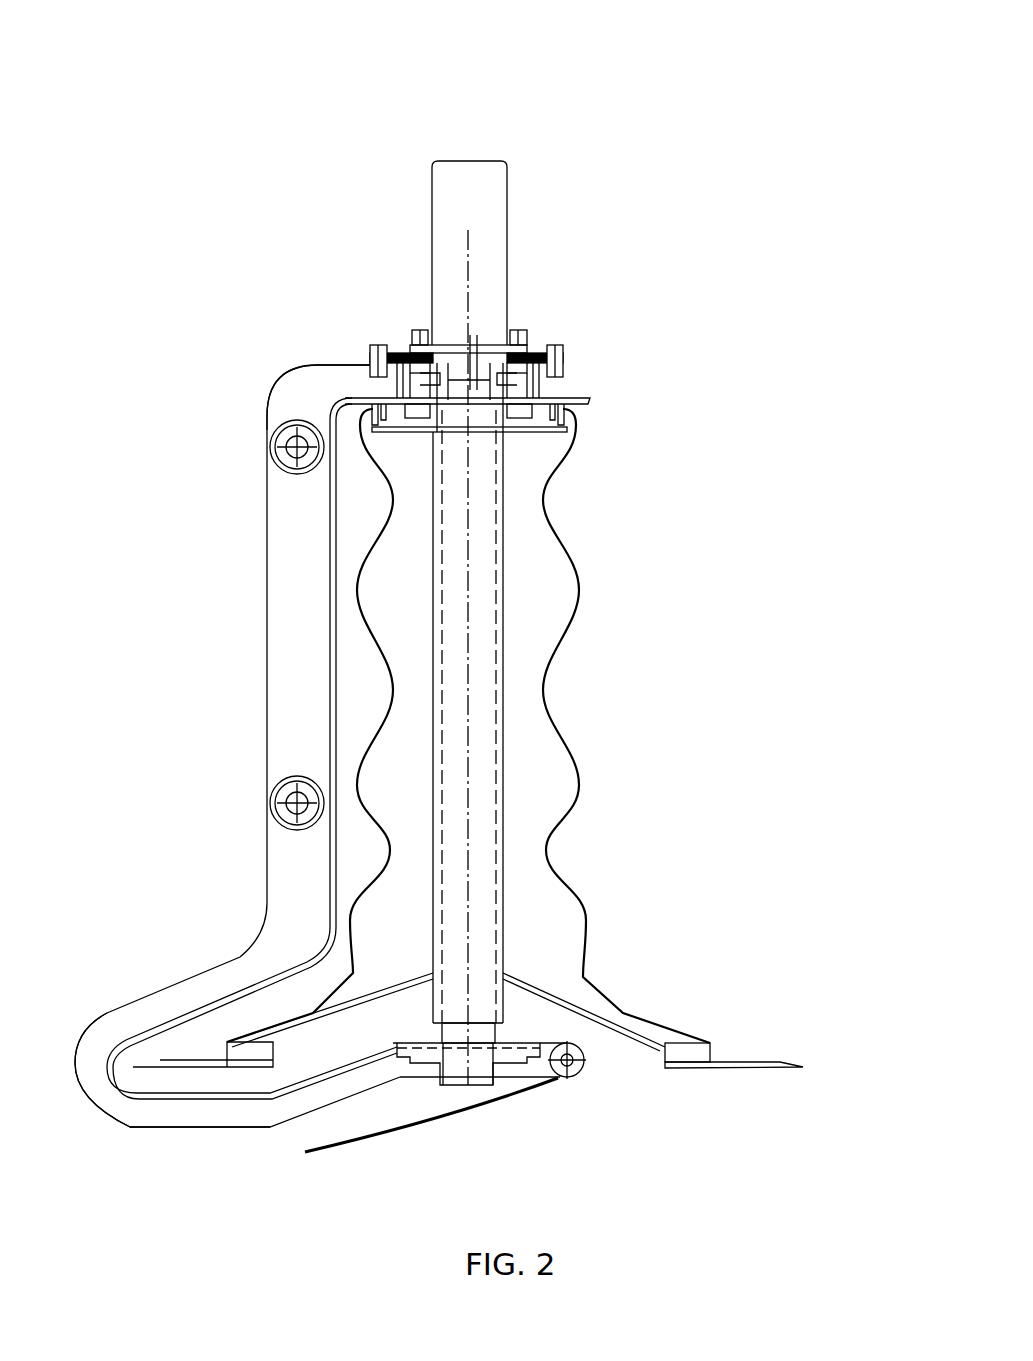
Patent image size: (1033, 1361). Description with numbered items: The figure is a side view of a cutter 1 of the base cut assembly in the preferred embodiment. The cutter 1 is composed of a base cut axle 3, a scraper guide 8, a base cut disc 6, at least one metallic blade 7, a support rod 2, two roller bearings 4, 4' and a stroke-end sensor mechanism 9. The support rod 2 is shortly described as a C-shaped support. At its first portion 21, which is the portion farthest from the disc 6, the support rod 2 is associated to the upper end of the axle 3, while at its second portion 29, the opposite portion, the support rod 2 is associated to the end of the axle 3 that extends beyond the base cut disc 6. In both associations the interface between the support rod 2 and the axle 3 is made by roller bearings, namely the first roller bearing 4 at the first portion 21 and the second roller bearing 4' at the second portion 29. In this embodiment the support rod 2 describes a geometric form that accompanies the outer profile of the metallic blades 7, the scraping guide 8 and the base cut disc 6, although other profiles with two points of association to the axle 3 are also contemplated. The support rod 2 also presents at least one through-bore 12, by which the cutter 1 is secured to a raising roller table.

The cutter 1 is at (623, 47).
The support rod 2 is at (196, 535).
The base cut axle 3 is at (487, 611).
The first roller bearing 4 is at (469, 296).
The second roller bearing 4' is at (489, 1122).
The base cut disc 6 is at (590, 1013).
The metallic blade 7 is at (777, 1063).
The scraper guide 8 is at (563, 905).
The stroke-end sensor mechanism 9 is at (507, 1100).
The through-bore 12 is at (297, 447).
The first portion 21 is at (318, 365).
The second portion 29 is at (273, 1128).